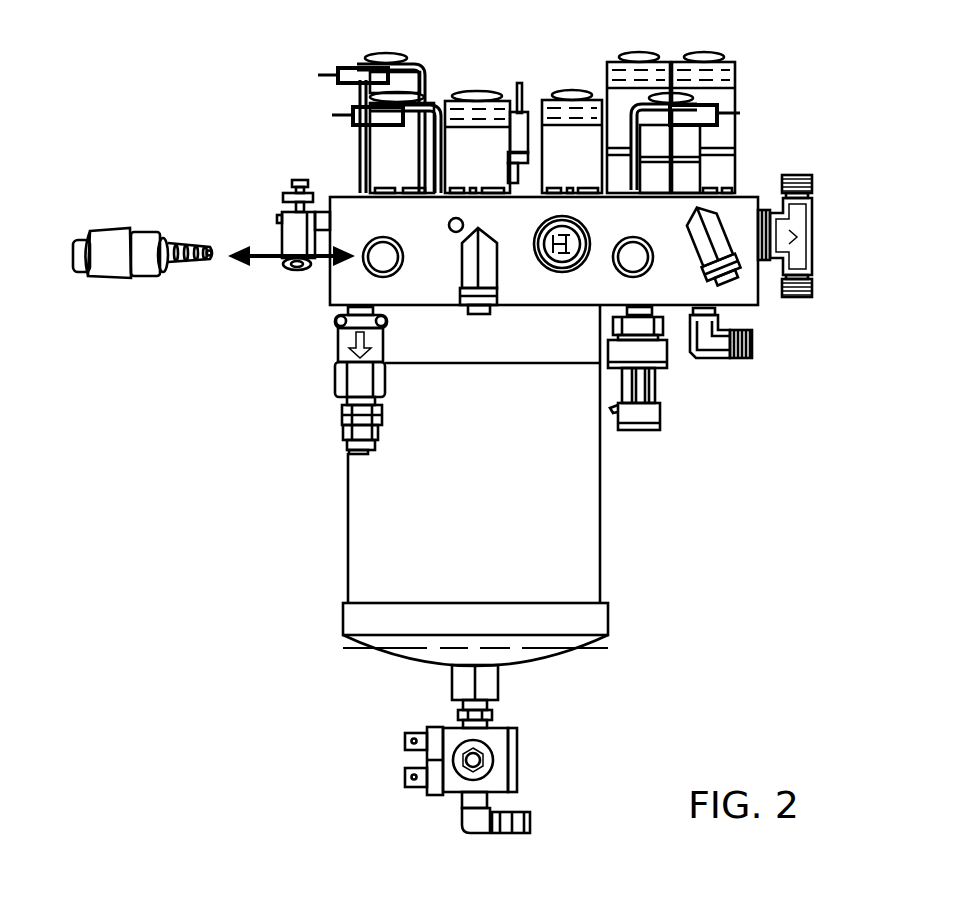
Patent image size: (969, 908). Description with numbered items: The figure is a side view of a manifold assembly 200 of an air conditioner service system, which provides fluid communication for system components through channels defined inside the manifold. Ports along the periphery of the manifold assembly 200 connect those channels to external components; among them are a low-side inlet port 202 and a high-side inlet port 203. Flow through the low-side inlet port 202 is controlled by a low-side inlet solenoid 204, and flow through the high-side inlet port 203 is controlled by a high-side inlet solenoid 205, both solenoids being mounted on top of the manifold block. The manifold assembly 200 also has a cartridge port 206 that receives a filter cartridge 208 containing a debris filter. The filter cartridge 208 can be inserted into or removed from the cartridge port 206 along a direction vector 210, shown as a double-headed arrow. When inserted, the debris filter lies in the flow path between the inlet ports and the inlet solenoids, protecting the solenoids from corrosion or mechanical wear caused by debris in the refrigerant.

The manifold assembly 200 is at (841, 105).
The low-side inlet port 202 is at (358, 192).
The high-side inlet port 203 is at (362, 183).
The low-side inlet solenoid 204 is at (415, 133).
The high-side inlet solenoid 205 is at (387, 52).
The cartridge port 206 is at (382, 263).
The filter cartridge 208 is at (78, 241).
The direction vector 210 is at (236, 268).